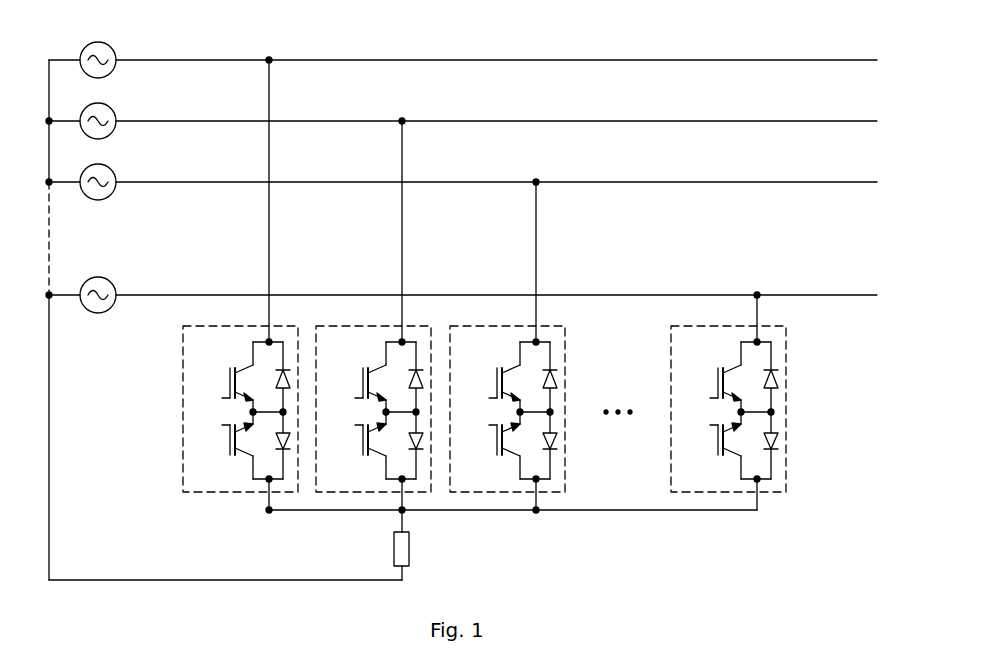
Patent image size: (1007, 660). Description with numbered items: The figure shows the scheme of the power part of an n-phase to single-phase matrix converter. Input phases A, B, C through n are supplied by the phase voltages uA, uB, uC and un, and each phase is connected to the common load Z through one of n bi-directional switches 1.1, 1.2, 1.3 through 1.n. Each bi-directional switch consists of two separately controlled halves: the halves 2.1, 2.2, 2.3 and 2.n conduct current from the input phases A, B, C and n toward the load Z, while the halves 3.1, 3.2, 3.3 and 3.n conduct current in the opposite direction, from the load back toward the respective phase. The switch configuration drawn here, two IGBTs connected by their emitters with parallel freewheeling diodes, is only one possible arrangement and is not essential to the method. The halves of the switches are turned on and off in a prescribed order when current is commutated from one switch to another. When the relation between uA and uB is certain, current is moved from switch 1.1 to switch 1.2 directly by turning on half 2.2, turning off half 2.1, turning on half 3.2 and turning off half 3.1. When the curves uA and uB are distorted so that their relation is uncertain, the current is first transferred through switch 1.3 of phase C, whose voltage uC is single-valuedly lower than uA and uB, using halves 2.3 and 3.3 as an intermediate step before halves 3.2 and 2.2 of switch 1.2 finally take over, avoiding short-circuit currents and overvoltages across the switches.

The bi-directional switch 1.1 is at (240, 283).
The separately controlled half 2.1 is at (222, 377).
The separately controlled half 3.1 is at (222, 445).
The bi-directional switch 1.2 is at (373, 314).
The separately controlled half 2.2 is at (355, 377).
The separately controlled half 3.2 is at (355, 445).
The bi-directional switch 1.3 is at (507, 344).
The separately controlled half 2.3 is at (489, 377).
The separately controlled half 3.3 is at (489, 445).
The bi-directional switch 1.n is at (728, 401).
The separately controlled half 2.n is at (710, 377).
The separately controlled half 3.n is at (710, 445).
The load Z is at (235, 545).
The supply voltage of phase A uA is at (463, 55).
The supply voltage of phase B uB is at (463, 116).
The supply voltage of phase C uC is at (463, 177).
The supply voltage of phase n un is at (463, 290).